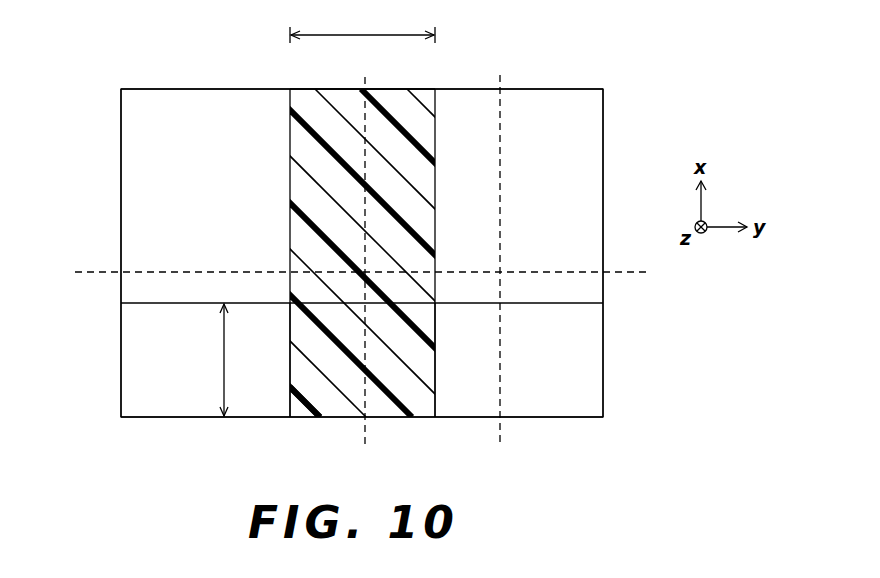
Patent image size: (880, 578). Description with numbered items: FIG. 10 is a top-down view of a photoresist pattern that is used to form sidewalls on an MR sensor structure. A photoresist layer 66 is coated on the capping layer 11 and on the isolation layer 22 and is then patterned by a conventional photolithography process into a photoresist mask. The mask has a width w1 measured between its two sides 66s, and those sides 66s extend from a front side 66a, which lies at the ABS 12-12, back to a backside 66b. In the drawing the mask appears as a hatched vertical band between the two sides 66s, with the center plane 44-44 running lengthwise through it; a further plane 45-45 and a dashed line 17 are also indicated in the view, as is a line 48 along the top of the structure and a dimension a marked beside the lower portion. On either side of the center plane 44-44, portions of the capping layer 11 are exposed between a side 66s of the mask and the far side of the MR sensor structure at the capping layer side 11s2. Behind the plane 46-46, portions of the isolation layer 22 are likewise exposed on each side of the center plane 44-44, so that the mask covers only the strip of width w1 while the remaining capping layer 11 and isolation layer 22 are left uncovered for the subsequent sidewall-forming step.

The capping layer 11 is at (170, 402).
The capping layer side 11s2 is at (121, 363).
The ABS 12 is at (121, 417).
The boundary line 17 is at (365, 270).
The isolation layer 22 is at (121, 137).
The center plane 44 is at (364, 257).
The reference line 45 is at (501, 259).
The plane 46- 46 is at (121, 303).
The top surface 48 is at (121, 89).
The photoresist layer 66 is at (398, 418).
The front side 66a is at (318, 418).
The backside 66b is at (314, 89).
The sides 66s is at (289, 383).
The width w1 is at (362, 24).
The distance a is at (231, 360).